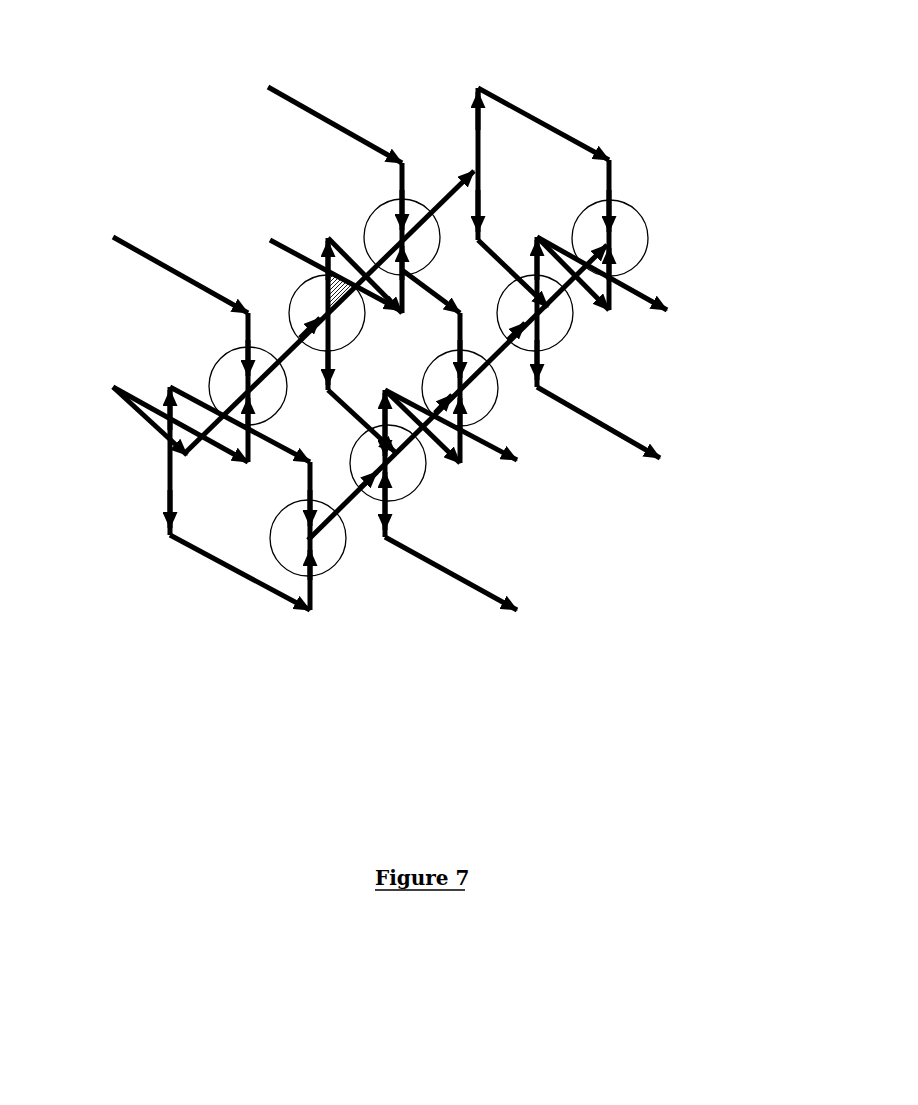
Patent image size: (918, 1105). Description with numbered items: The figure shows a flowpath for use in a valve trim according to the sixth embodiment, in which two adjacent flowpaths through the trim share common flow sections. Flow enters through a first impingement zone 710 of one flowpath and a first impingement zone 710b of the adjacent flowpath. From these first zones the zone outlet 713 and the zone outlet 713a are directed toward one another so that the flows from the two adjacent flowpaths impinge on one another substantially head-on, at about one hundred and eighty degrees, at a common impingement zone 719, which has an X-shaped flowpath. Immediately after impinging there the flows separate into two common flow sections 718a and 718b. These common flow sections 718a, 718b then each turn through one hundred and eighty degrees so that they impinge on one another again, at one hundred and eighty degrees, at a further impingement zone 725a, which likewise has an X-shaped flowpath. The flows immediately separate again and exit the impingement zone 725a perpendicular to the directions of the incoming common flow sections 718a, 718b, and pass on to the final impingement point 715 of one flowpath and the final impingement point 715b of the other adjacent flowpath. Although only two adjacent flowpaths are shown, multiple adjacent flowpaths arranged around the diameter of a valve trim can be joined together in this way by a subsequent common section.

The first impingement zone 710 is at (422, 197).
The common flow section 718a is at (423, 290).
The zone outlet 713 is at (317, 253).
The common impingement zone 719 is at (303, 291).
The zone outlet 713a is at (287, 343).
The first impingement zone 710b is at (205, 366).
The final impingement point 715 is at (577, 315).
The impingement zone 725a is at (503, 388).
The common flow section 718b is at (442, 466).
The final impingement point 715b is at (403, 484).